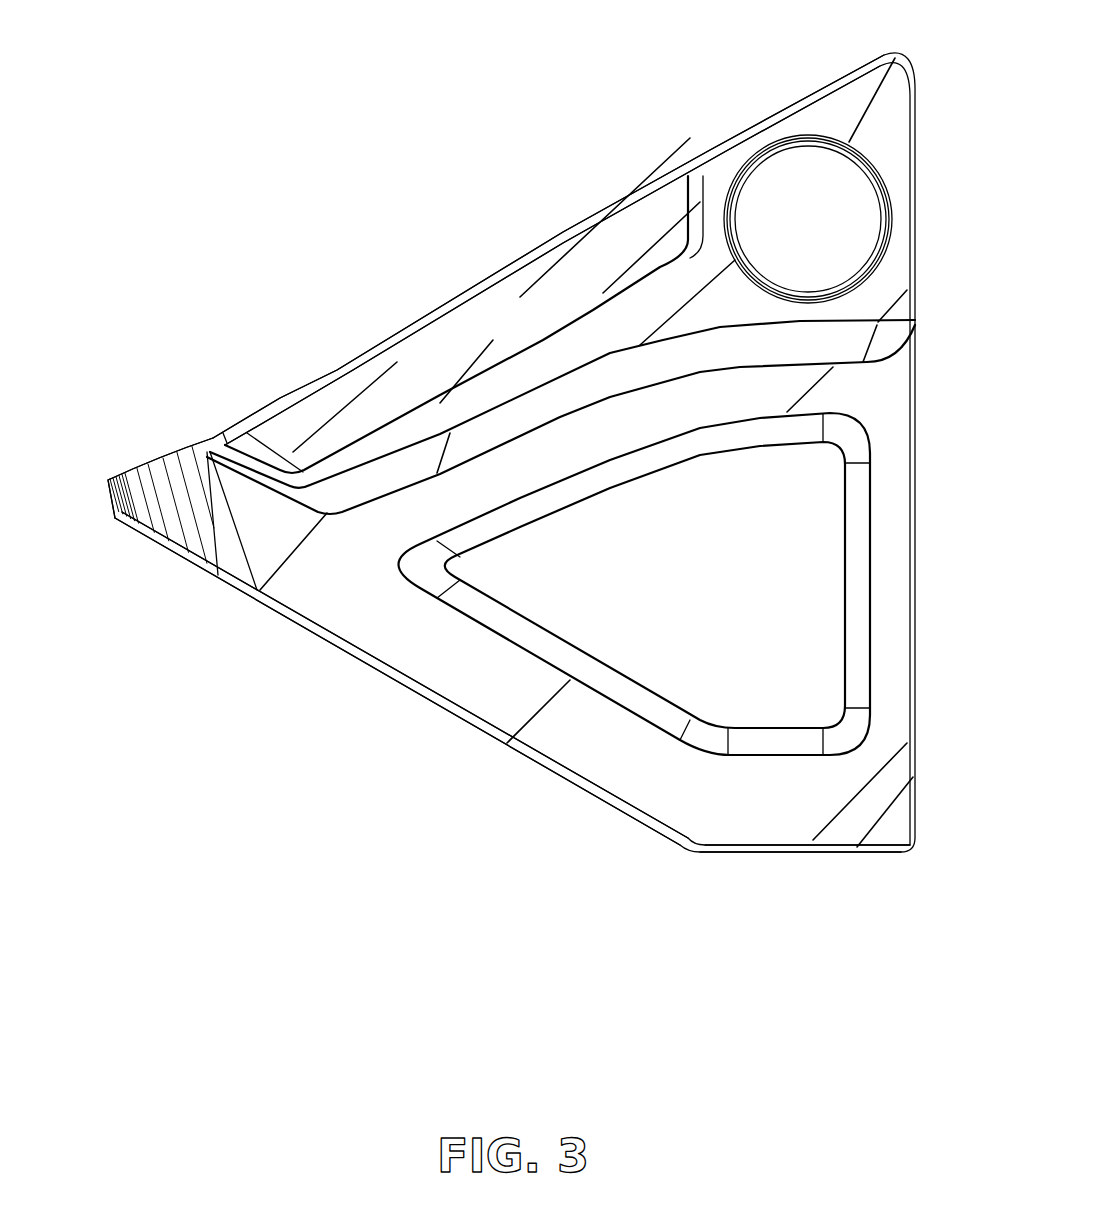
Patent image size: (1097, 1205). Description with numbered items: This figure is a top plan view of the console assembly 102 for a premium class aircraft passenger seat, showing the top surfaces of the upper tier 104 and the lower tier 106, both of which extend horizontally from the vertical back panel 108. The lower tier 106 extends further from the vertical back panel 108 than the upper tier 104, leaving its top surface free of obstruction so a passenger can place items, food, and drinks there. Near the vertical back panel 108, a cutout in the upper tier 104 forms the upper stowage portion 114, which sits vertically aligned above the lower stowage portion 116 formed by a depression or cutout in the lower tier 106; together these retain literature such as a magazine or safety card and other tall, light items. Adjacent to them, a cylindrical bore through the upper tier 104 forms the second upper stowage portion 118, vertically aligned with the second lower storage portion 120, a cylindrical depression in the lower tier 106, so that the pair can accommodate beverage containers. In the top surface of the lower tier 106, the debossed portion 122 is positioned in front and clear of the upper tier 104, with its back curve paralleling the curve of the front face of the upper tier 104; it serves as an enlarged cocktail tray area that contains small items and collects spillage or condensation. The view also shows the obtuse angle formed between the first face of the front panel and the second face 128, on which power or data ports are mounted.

The console assembly 102 is at (602, 72).
The upper tier 104 is at (93, 533).
The lower tier 106 is at (48, 660).
The vertical back panel 108 is at (262, 409).
The upper stowage portion 114 is at (567, 262).
The lower stowage portion 116 is at (510, 341).
The second upper stowage portion 118 is at (866, 211).
The second lower storage portion 120 is at (785, 231).
The debossed portion 122 is at (667, 588).
The second face 128 is at (810, 854).